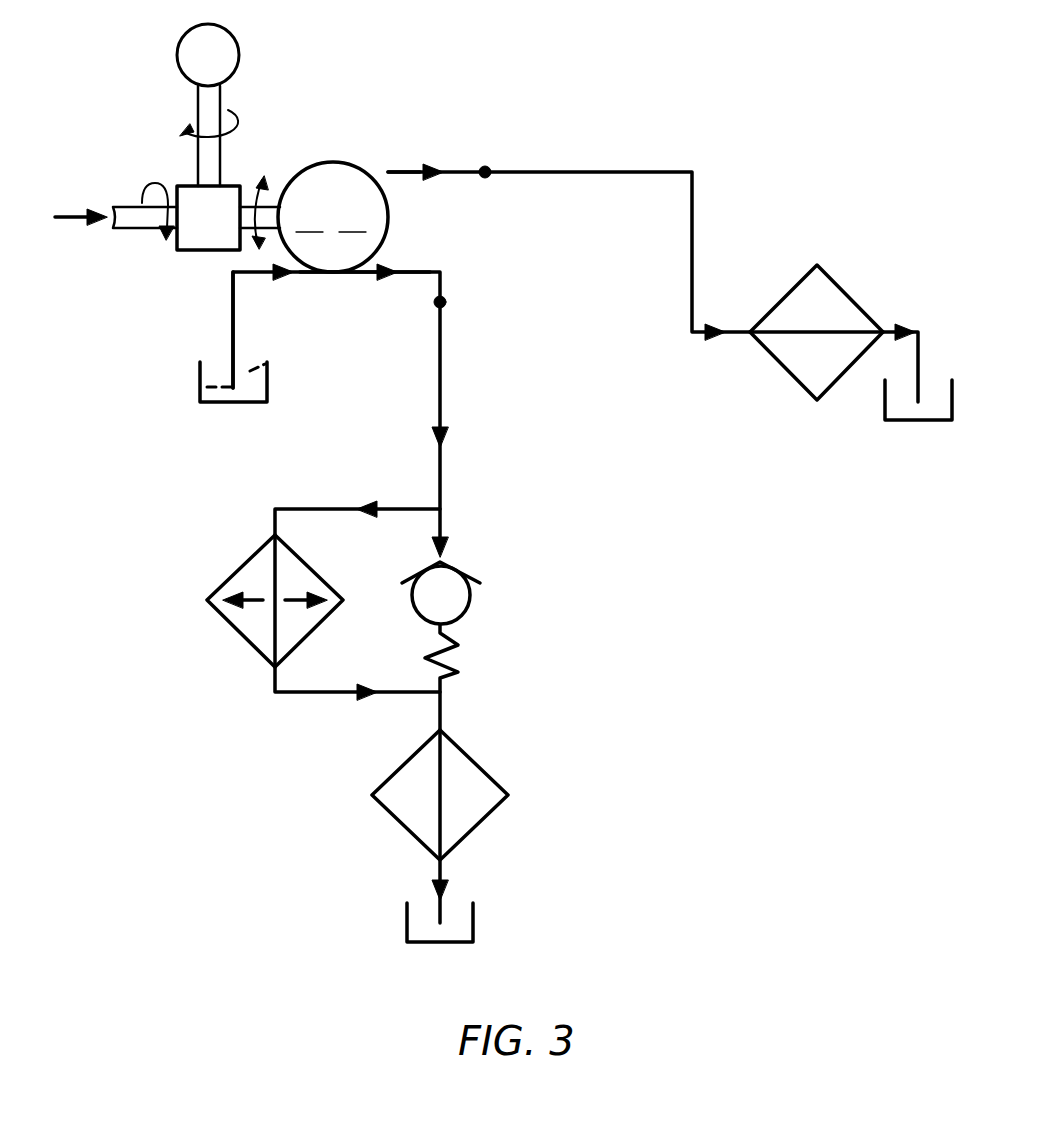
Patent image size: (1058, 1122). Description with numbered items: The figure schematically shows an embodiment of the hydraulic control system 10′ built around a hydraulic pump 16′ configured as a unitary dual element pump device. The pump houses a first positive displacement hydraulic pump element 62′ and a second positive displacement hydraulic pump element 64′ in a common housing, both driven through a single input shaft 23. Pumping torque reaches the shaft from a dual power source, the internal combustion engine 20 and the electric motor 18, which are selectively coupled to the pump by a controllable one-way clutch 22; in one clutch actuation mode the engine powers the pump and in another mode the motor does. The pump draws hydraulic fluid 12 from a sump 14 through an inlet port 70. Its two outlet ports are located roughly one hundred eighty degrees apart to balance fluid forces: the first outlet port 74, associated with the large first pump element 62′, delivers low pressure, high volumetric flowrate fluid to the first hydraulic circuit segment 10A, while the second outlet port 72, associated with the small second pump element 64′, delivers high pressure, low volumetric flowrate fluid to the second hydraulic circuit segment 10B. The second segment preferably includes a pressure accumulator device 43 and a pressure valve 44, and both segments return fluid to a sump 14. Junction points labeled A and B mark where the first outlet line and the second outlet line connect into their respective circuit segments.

The hydraulic control system 10′ is at (711, 84).
The first hydraulic circuit segment 10A is at (847, 293).
The second hydraulic circuit segment 10B is at (478, 763).
The hydraulic fluid 12 is at (240, 373).
The sump 14 is at (230, 405).
The hydraulic pump 16′ is at (333, 162).
The electric motor 18 is at (240, 58).
The internal combustion engine 20 is at (94, 203).
The controllable one-way clutch 22 is at (228, 183).
The single input shaft 23 is at (268, 205).
The pressure accumulator device 43 is at (242, 567).
The pressure valve 44 is at (470, 572).
The first positive displacement hydraulic pump element 62′ is at (314, 221).
The second positive displacement hydraulic pump element 64′ is at (354, 221).
The inlet port 70 is at (232, 335).
The second outlet port 72 is at (370, 275).
The first outlet port 74 is at (403, 170).
The node A is at (486, 166).
The node B is at (447, 302).